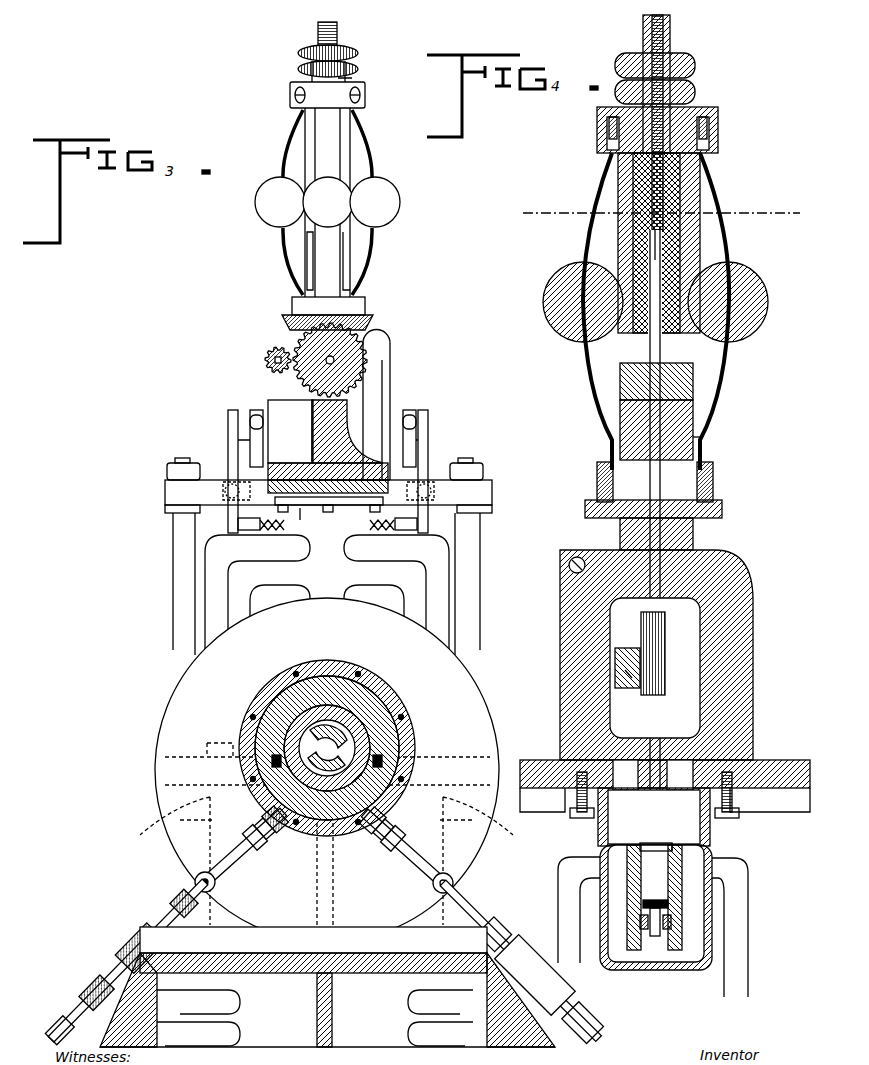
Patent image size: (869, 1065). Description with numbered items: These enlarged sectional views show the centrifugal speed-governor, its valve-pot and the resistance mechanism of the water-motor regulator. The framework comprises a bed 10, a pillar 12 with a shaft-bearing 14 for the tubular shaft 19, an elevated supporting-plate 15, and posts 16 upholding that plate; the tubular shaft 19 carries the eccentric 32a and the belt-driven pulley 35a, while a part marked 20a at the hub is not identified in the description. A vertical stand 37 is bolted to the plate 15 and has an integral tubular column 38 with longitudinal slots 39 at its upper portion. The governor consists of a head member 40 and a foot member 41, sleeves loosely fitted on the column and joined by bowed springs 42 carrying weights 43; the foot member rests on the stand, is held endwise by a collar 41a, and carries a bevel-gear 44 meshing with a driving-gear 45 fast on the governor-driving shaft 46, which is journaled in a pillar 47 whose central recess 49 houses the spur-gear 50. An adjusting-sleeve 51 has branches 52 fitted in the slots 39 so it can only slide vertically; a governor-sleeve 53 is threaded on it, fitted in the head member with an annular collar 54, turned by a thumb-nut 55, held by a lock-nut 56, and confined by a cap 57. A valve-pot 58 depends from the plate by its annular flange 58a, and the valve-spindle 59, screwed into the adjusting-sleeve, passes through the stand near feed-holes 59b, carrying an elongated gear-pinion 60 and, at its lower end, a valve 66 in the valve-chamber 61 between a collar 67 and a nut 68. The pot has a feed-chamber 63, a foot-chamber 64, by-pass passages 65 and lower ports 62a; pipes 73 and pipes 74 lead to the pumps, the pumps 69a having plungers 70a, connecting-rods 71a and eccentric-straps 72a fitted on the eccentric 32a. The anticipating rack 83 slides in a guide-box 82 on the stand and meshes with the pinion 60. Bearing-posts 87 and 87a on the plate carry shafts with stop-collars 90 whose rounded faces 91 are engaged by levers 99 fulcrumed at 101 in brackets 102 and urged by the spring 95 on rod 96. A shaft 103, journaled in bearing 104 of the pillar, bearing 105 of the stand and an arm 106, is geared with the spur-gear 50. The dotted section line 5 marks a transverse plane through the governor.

In FIG. 4, the section line 5 is at (654, 213).
In FIG. 3, the bed 10 is at (350, 975).
In FIG. 3, the pillar 12 is at (208, 800).
In FIG. 3, the shaft-bearing 14 is at (326, 832).
In FIG. 3, the elevated supporting-plate 15 is at (173, 492).
In FIG. 4, the elevated supporting-plate 15 is at (787, 770).
In FIG. 3, the posts 16 is at (185, 565).
In FIG. 3, the tubular shaft 19 is at (395, 702).
In FIG. 3, the hub key 20a is at (352, 842).
In FIG. 3, the eccentric 32a is at (380, 692).
In FIG. 3, the motor-driven element 35a is at (165, 735).
In FIG. 3, the vertical stand 37 is at (390, 402).
In FIG. 4, the vertical stand 37 is at (753, 641).
In FIG. 4, the tubular column 38 is at (693, 438).
In FIG. 4, the longitudinal slots 39 is at (665, 236).
In FIG. 3, the head member 40 is at (350, 149).
In FIG. 4, the head member 40 is at (700, 188).
In FIG. 4, the foot member 41 is at (693, 420).
In FIG. 3, the collar 41a is at (308, 244).
In FIG. 4, the collar 41a is at (693, 388).
In FIG. 3, the bowed springs 42 is at (285, 243).
In FIG. 4, the bowed springs 42 is at (730, 365).
In FIG. 3, the weights 43 is at (268, 210).
In FIG. 4, the weights 43 is at (765, 290).
In FIG. 3, the bevel-gear 44 is at (368, 320).
In FIG. 4, the bevel-gear 44 is at (722, 505).
In FIG. 3, the driving-gear 45 is at (382, 372).
In FIG. 3, the governor-driving shaft 46 is at (334, 361).
In FIG. 3, the pillar 47 is at (322, 442).
In FIG. 3, the central recess 49 is at (318, 400).
In FIG. 3, the spur-gear 50 is at (345, 345).
In FIG. 3, the adjusting-sleeve 51 is at (340, 34).
In FIG. 4, the adjusting-sleeve 51 is at (665, 185).
In FIG. 4, the branches 52 is at (640, 210).
In FIG. 3, the governor-sleeve 53 is at (352, 78).
In FIG. 4, the governor-sleeve 53 is at (613, 152).
In FIG. 4, the annular collar 54 is at (705, 115).
In FIG. 3, the thumb-nut 55 is at (300, 69).
In FIG. 4, the thumb-nut 55 is at (700, 88).
In FIG. 3, the lock-nut 56 is at (300, 53).
In FIG. 4, the lock-nut 56 is at (695, 62).
In FIG. 3, the cap 57 is at (365, 98).
In FIG. 4, the cap 57 is at (720, 130).
In FIG. 3, the valve-pot 58 is at (300, 523).
In FIG. 4, the valve-pot 58 is at (705, 825).
In FIG. 3, the annular flange 58a is at (290, 500).
In FIG. 4, the annular flange 58a is at (740, 808).
In FIG. 4, the valve-spindle 59 is at (655, 262).
In FIG. 4, the feed-holes 59b is at (622, 773).
In FIG. 4, the elongated gear-pinion 60 is at (660, 648).
In FIG. 4, the valve-chamber 61 is at (652, 936).
In FIG. 4, the lower series of ports 62a is at (640, 940).
In FIG. 4, the feed-chamber 63 is at (615, 820).
In FIG. 4, the foot-chamber 64 is at (700, 965).
In FIG. 4, the by-pass passages 65 is at (615, 883).
In FIG. 4, the valve 66 is at (672, 846).
In FIG. 4, the collar 67 is at (658, 848).
In FIG. 4, the nut 68 is at (670, 905).
In FIG. 3, the pumps 69a is at (105, 962).
In FIG. 3, the plungers 70a is at (198, 895).
In FIG. 3, the connecting-rods 71a is at (232, 857).
In FIG. 3, the eccentric-straps 72a is at (275, 683).
In FIG. 3, the pipes 73 is at (205, 590).
In FIG. 4, the pipes 73 is at (560, 893).
In FIG. 3, the pipes 74 is at (258, 605).
In FIG. 4, the pipes 74 is at (572, 958).
In FIG. 4, the guide-box 82 is at (620, 648).
In FIG. 4, the rack 83 is at (630, 690).
In FIG. 3, the bearing-post 87 is at (428, 450).
In FIG. 3, the bearing-post 87a is at (240, 463).
In FIG. 3, the stop-collars 90 is at (255, 417).
In FIG. 3, the rounded faces 91 is at (328, 516).
In FIG. 3, the expansion-spring 95 is at (378, 530).
In FIG. 3, the horizontal rod 96 is at (273, 530).
In FIG. 3, the levers 99 is at (232, 455).
In FIG. 3, the fulcrum 101 is at (325, 469).
In FIG. 3, the bracket 102 is at (225, 502).
In FIG. 3, the horizontal shaft 103 is at (272, 364).
In FIG. 3, the bearing 104 is at (292, 424).
In FIG. 4, the bearing 105 is at (570, 560).
In FIG. 3, the arm 106 is at (268, 352).